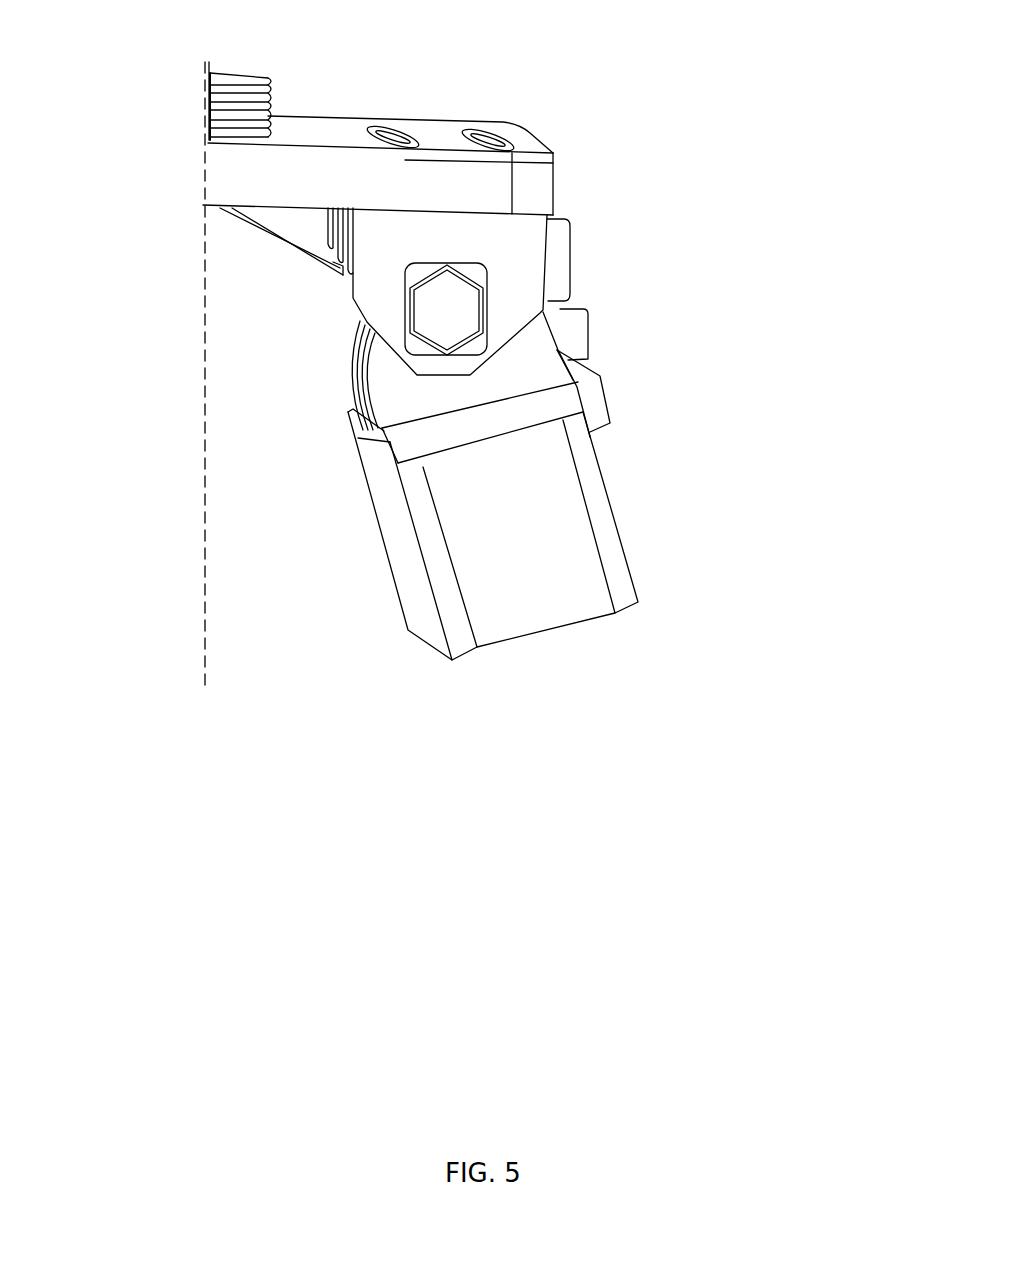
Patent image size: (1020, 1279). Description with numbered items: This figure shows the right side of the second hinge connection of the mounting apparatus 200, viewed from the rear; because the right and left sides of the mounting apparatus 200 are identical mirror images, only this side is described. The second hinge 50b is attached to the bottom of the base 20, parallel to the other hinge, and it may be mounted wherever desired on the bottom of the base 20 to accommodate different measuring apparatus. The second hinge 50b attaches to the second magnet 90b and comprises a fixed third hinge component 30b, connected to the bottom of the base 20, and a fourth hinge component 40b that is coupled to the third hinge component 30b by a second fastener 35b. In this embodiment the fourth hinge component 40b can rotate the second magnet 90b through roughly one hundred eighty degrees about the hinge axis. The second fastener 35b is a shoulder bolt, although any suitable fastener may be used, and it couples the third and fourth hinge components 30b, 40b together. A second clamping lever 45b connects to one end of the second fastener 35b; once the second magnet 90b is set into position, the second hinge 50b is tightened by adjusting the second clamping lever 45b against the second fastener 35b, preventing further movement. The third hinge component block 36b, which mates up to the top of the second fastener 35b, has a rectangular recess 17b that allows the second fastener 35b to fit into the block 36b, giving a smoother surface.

The mounting apparatus 200 is at (373, 97).
The base 20 is at (569, 175).
The third hinge component 30b is at (587, 252).
The fourth hinge component 40b is at (658, 334).
The second hinge 50b is at (726, 289).
The second clamping lever 45b is at (260, 234).
The third hinge component block 36b is at (392, 252).
The second fastener 35b is at (435, 318).
The rectangular recess 17b is at (485, 348).
The second magnet 90b is at (362, 557).